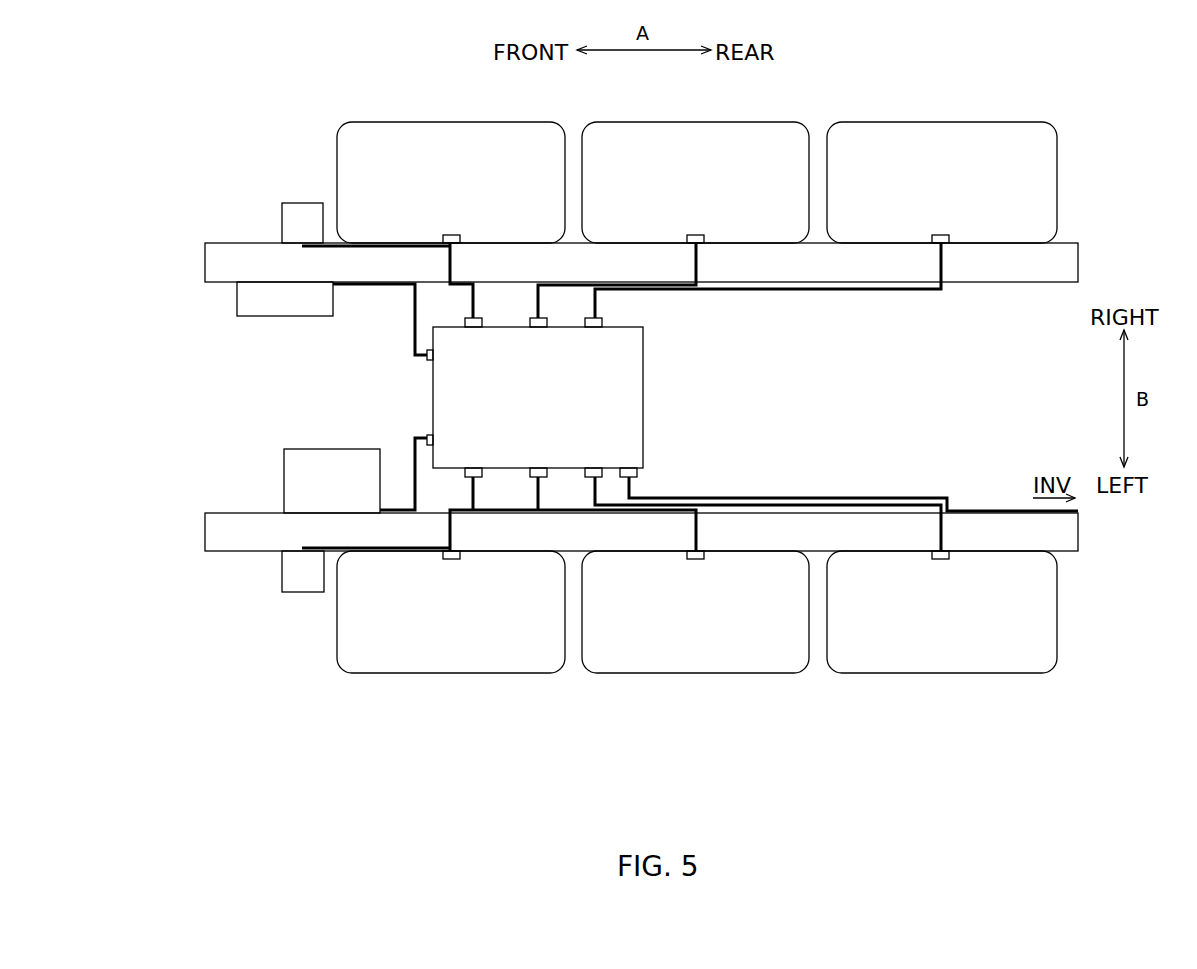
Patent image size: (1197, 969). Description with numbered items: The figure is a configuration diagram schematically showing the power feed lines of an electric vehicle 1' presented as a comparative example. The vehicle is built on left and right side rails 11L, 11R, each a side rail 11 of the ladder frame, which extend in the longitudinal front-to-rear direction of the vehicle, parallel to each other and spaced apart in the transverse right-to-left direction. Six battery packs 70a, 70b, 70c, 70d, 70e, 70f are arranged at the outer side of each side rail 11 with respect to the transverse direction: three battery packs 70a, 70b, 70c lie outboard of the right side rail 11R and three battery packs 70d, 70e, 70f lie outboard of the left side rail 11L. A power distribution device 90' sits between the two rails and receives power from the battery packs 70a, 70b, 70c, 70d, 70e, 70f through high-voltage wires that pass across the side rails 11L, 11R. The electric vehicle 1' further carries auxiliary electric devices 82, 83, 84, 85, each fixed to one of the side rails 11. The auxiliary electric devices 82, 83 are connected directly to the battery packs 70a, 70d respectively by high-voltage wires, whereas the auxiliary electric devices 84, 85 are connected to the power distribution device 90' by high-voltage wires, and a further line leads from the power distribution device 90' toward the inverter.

The electric vehicle 1' is at (227, 75).
The side rail 11 is at (188, 352).
The right side rail 11R is at (216, 272).
The left side rail 11L is at (217, 522).
The battery pack 70a is at (419, 140).
The battery pack 70b is at (663, 140).
The battery pack 70c is at (907, 140).
The battery pack 70d is at (420, 656).
The battery pack 70e is at (664, 656).
The battery pack 70f is at (908, 656).
The auxiliary electric device 82 is at (296, 215).
The auxiliary electric device 83 is at (297, 595).
The auxiliary electric device 84 is at (289, 308).
The auxiliary electric device 85 is at (322, 457).
The power distribution device 90' is at (564, 397).